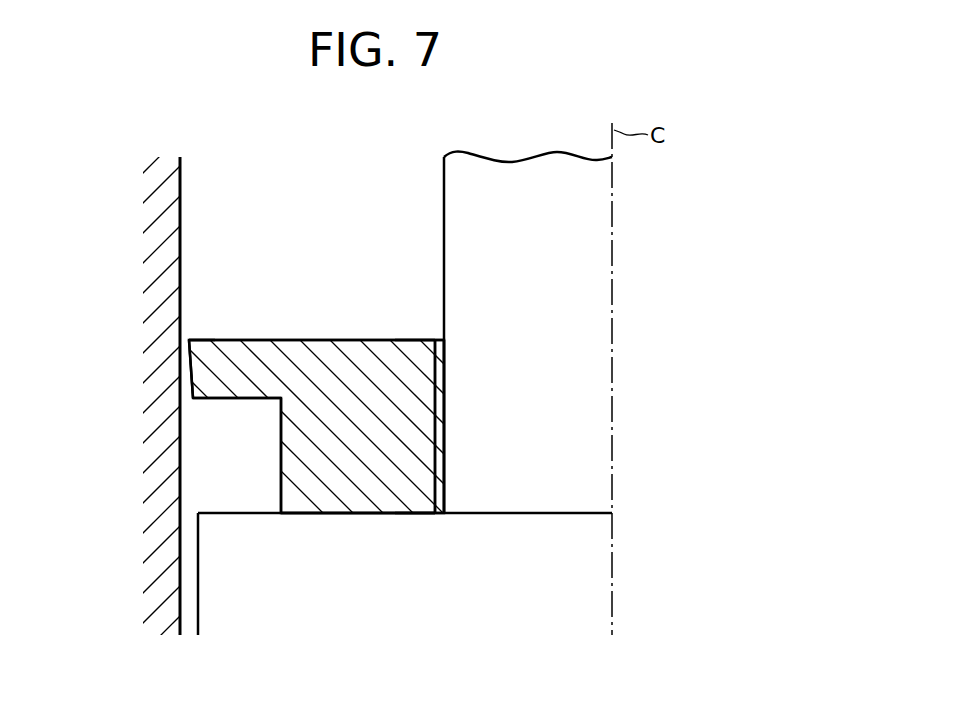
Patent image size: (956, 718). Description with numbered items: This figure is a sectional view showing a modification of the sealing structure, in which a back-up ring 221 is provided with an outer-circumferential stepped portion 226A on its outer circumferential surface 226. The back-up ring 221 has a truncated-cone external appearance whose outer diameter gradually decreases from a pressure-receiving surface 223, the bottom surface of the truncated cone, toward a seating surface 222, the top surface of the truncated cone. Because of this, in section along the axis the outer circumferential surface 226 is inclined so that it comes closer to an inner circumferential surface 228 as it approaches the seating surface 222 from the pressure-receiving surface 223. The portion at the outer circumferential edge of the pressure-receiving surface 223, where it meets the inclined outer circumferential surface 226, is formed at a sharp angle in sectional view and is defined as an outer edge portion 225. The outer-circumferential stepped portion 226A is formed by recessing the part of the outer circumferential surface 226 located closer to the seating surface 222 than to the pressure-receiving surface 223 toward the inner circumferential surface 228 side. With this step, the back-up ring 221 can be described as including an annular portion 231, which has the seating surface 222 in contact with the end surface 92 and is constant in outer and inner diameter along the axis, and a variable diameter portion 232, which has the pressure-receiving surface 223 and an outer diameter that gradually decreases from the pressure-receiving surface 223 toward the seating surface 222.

The back-up ring 221 is at (344, 304).
The pressure-receiving surface 223 is at (305, 340).
The outer edge portion 225 is at (190, 341).
The outer circumferential surface 226 is at (191, 371).
The outer-circumferential stepped portion 226A is at (281, 450).
The end surface 92 is at (217, 513).
The seating surface 222 is at (337, 517).
The variable diameter portion 232 is at (390, 370).
The inner circumferential surface 228 is at (437, 425).
The annular portion 231 is at (390, 468).